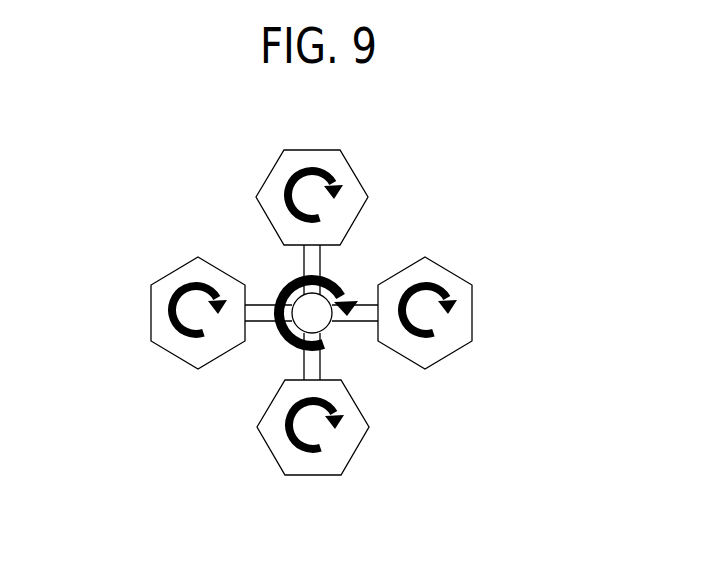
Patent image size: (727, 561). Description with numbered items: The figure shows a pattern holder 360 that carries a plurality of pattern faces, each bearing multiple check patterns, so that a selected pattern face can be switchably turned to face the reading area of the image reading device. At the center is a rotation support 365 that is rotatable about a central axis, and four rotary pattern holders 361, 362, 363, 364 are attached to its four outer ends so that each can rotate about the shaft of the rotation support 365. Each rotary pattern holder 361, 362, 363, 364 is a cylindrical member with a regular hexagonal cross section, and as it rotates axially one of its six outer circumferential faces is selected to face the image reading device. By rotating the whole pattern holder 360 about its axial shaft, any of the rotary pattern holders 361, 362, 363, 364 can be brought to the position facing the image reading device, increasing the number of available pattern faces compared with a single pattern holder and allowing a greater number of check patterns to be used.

The pattern holder 360 is at (415, 423).
The rotary pattern holder 361 is at (303, 150).
The rotary pattern holder 362 is at (472, 308).
The rotary pattern holder 363 is at (318, 475).
The rotary pattern holder 364 is at (152, 305).
The rotation support 365 is at (303, 366).